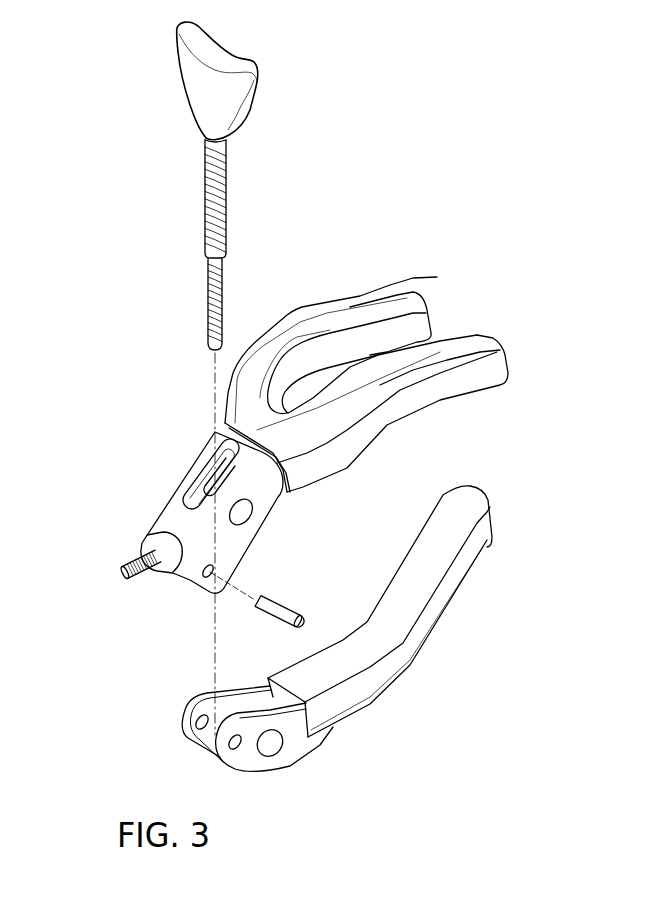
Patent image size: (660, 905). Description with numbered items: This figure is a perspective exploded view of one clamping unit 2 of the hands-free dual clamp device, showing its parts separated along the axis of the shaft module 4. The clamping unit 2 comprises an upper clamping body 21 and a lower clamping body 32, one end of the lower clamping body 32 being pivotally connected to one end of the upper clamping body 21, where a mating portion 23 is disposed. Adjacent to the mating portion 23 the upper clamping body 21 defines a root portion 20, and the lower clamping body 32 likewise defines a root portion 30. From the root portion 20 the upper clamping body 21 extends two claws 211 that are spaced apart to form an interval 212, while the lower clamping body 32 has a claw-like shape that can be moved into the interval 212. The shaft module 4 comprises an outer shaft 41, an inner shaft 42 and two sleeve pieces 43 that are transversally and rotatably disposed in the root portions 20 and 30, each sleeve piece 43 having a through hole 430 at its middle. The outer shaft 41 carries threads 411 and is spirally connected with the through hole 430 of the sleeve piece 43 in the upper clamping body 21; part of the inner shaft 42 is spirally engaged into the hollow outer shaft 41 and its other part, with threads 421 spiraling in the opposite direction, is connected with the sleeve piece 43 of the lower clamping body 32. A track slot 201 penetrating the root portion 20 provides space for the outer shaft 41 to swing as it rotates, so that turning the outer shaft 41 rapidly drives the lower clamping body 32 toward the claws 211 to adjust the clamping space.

The clamping unit 2 is at (426, 236).
The shaft module 4 is at (115, 166).
The root portion 20 is at (226, 543).
The upper clamping body 21 is at (507, 263).
The mating portion 23 is at (132, 567).
The root portion 30 is at (240, 760).
The lower clamping body 32 is at (353, 695).
The outer shaft 41 is at (207, 192).
The inner shaft 42 is at (210, 313).
The sleeve piece 43 is at (194, 498).
The track slot 201 is at (216, 440).
The claw 211 is at (403, 360).
The interval 212 is at (307, 403).
The threads 411 is at (217, 222).
The threads 421 is at (217, 282).
The through hole 430 is at (210, 492).